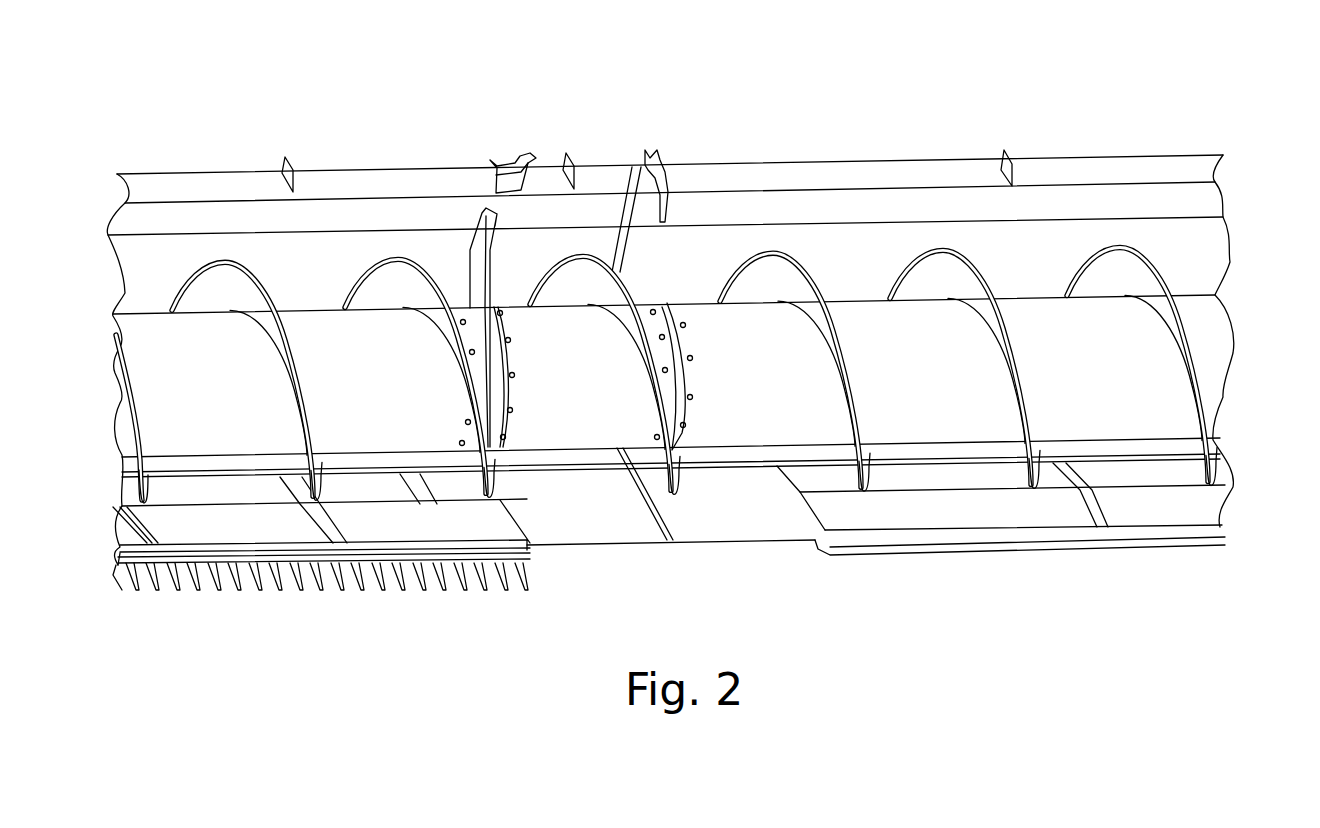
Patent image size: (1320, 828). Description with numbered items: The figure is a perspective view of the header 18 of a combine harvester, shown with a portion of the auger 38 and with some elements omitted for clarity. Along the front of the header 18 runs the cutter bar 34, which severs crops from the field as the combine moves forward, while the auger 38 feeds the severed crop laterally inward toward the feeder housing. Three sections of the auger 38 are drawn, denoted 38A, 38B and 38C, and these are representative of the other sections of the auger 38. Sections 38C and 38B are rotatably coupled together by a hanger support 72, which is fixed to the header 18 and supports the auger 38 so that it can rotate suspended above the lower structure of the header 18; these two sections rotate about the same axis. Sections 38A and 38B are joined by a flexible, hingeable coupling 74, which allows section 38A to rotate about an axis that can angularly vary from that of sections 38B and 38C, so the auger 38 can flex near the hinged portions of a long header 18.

The header 18 is at (897, 118).
The cutter bar 34 is at (193, 588).
The auger 38 is at (1150, 357).
The auger section 38A is at (942, 391).
The auger section 38B is at (599, 397).
The auger section 38C is at (387, 397).
The hanger support 72 is at (497, 262).
The hingeable coupling 74 is at (672, 287).